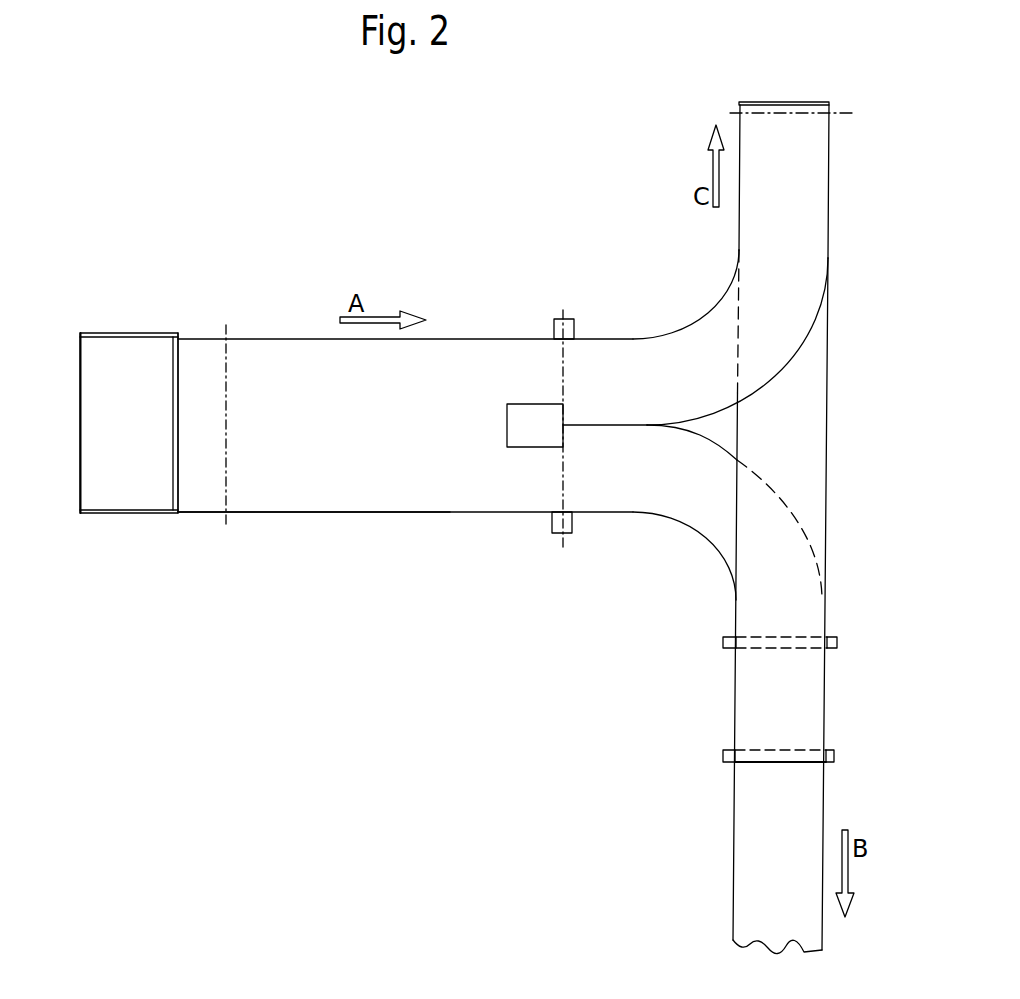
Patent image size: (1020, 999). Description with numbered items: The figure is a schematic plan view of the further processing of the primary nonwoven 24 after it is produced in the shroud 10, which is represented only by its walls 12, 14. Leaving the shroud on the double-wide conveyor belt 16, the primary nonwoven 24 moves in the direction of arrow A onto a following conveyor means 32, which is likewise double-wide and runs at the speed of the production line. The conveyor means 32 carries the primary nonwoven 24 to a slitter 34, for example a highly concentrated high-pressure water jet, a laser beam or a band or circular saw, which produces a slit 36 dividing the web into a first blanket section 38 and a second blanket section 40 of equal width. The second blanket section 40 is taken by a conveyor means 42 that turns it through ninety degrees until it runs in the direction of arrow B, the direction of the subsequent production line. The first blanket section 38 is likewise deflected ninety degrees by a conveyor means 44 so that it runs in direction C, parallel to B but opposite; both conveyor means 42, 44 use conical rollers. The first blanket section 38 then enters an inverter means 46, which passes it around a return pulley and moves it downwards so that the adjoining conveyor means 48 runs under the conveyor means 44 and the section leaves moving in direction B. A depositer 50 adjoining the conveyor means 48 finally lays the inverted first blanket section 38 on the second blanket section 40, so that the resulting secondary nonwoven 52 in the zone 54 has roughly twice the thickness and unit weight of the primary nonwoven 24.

The shroud 10 is at (129, 423).
The wall 12 is at (121, 334).
The wall 14 is at (80, 365).
The conveyor belt 16 is at (200, 513).
The primary nonwoven 24 is at (303, 437).
The conveyor means 32 is at (401, 513).
The slitter 34 is at (520, 418).
The slit 36 is at (600, 430).
The first blanket section 38 is at (698, 352).
The second blanket section 40 is at (707, 495).
The conveyor means 42 is at (637, 514).
The conveyor means 44 is at (653, 332).
The inverter means 46 is at (829, 153).
The conveyor means 48 is at (828, 421).
The depositer 50 is at (826, 693).
The secondary nonwoven 52 is at (786, 907).
The zone 54 is at (733, 842).